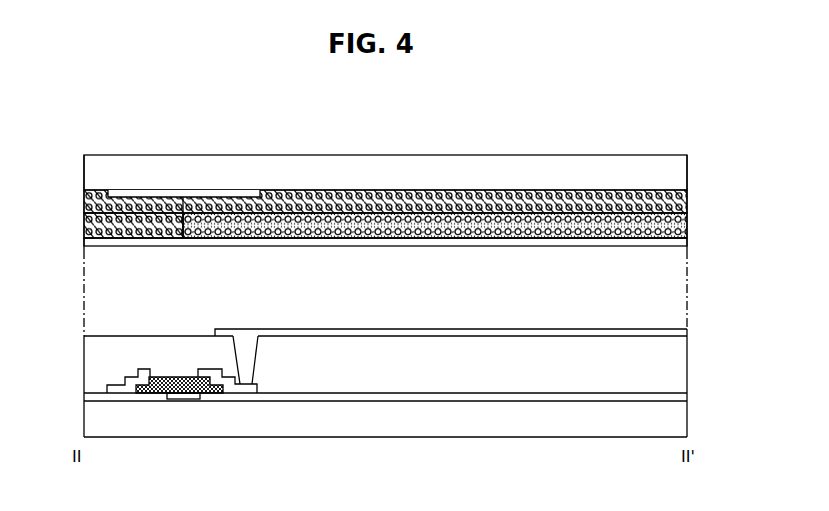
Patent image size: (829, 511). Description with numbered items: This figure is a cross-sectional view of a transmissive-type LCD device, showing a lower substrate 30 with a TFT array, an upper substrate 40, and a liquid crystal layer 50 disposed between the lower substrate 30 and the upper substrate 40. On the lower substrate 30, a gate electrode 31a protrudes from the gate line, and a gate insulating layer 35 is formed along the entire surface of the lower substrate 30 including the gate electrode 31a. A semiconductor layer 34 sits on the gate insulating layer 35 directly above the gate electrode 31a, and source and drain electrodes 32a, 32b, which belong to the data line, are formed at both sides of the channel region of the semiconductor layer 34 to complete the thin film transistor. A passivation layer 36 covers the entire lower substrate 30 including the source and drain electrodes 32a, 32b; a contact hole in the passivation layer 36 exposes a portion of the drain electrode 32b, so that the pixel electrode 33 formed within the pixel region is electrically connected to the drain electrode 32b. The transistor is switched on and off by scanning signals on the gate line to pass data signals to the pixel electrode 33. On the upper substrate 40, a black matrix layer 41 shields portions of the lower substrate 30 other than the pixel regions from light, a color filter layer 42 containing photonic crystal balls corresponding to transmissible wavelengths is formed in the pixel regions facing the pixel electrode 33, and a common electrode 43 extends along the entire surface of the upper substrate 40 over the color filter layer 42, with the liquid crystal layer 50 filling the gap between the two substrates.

The lower substrate 30 is at (686, 425).
The gate electrode 31a is at (177, 399).
The source electrode 32a is at (155, 372).
The drain electrode 32b is at (251, 386).
The pixel electrode 33 is at (686, 333).
The semiconductor layer 34 is at (218, 393).
The gate insulating layer 35 is at (686, 400).
The passivation layer 36 is at (686, 368).
The upper substrate 40 is at (686, 177).
The black matrix layer 41 is at (245, 192).
The color filter layer 42 is at (690, 193).
The common electrode 43 is at (686, 245).
The liquid crystal layer 50 is at (684, 293).